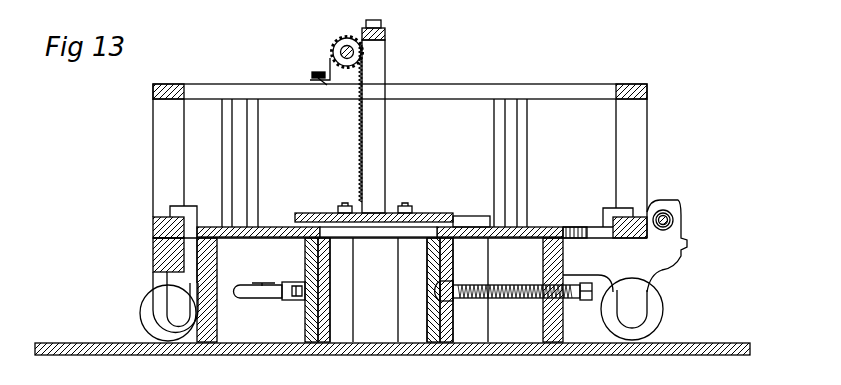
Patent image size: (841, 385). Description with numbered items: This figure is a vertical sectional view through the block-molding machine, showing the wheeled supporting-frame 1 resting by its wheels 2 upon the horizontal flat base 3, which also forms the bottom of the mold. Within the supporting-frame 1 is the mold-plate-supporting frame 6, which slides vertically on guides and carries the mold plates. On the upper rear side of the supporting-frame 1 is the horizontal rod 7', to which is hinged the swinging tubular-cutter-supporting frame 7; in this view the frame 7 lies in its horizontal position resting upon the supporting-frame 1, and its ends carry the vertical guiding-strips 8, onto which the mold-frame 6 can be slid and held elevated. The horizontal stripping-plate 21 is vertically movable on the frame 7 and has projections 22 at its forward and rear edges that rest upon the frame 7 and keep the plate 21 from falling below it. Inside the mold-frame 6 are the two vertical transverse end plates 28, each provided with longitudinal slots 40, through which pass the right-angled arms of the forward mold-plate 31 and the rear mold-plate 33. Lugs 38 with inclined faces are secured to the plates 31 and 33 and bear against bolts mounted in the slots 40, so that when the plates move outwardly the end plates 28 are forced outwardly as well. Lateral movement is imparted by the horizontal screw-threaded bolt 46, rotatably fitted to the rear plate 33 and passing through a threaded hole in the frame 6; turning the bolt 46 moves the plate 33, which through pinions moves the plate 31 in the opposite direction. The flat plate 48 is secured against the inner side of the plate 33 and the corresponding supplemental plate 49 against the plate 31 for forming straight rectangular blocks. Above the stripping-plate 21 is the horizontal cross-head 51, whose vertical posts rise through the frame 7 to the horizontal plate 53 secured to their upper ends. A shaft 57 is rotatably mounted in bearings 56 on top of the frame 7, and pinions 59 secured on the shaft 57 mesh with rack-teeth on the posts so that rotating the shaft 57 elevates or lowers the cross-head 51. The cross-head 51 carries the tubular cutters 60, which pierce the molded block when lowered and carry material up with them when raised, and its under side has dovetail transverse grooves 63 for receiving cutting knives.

The supporting-frame 1 is at (153, 255).
The wheels 2 is at (145, 320).
The base 3 is at (735, 343).
The mold-plate-supporting frame 6 is at (625, 246).
The tubular-cutter-supporting frame 7 is at (400, 151).
The rod 7' is at (679, 217).
The guiding-strips 8 is at (243, 125).
The stripping-plate 21 is at (543, 228).
The projections 22 is at (192, 206).
The end plates 28 is at (227, 328).
The forward mold-plate 31 is at (305, 250).
The rear mold-plate 33 is at (453, 268).
The lugs 38 is at (287, 299).
The longitudinal slots 40 is at (261, 289).
The screw-threaded bolt 46 is at (582, 300).
The flat plate 48 is at (428, 318).
The supplemental plate 49 is at (330, 294).
The cross-head 51 is at (440, 213).
The horizontal plate 53 is at (386, 36).
The bearings 56 is at (312, 77).
The shaft 57 is at (340, 54).
The pinions 59 is at (338, 43).
The tubular cutters 60 is at (378, 290).
The transverse groove 63 is at (303, 223).